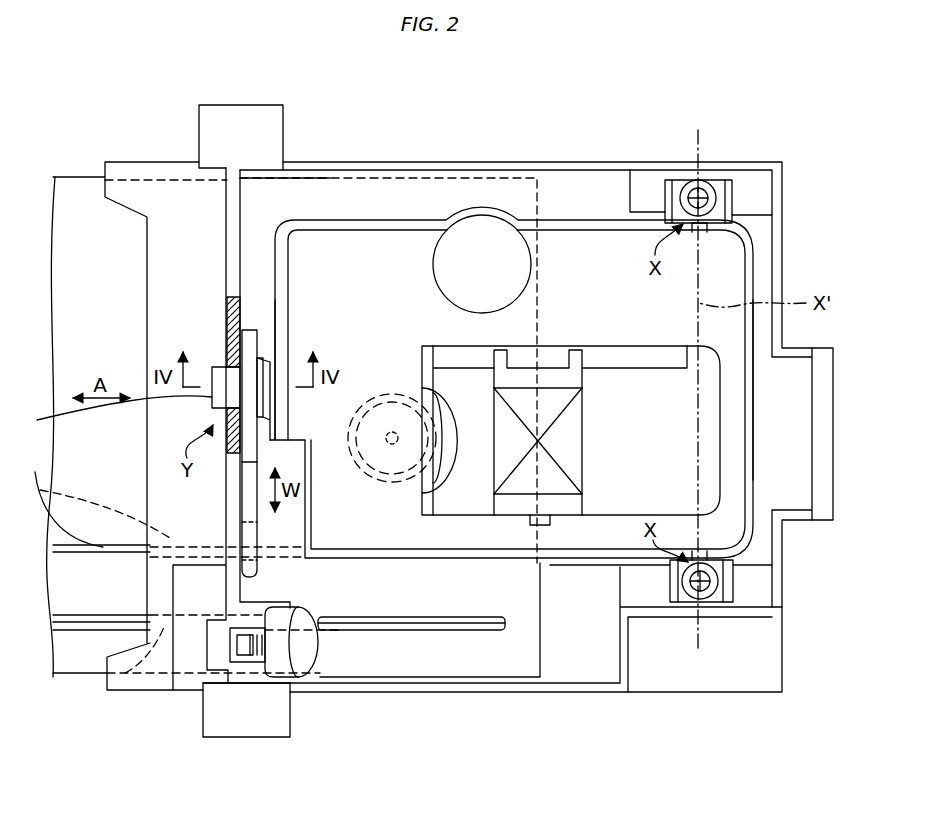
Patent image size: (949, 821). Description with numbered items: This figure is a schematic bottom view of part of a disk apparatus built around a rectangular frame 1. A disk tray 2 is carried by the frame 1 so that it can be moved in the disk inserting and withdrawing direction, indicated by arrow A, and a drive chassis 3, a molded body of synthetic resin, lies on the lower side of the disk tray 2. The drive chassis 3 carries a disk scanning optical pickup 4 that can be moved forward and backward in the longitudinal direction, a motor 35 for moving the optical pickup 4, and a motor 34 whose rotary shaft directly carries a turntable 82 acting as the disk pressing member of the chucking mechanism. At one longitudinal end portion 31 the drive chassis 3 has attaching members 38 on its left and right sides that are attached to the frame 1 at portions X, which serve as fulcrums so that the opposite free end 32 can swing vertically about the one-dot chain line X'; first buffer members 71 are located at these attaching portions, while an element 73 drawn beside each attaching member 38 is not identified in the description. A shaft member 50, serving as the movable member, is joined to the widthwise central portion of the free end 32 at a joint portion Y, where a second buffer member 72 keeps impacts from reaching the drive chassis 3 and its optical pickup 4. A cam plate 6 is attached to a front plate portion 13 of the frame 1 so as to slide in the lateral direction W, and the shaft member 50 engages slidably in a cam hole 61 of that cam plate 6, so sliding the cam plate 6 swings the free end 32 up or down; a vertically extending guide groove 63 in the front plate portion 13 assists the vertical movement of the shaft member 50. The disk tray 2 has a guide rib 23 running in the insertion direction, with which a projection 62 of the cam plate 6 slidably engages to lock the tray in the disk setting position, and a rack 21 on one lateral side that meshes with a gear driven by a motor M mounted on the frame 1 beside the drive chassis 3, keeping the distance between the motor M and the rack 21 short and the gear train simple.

The frame 1 is at (572, 160).
The disk tray 2 is at (137, 181).
The drive chassis 3 is at (384, 220).
The optical pickup 4 is at (560, 490).
The cam plate 6 is at (250, 330).
The front plate portion 13 is at (226, 302).
The rack 21 is at (102, 682).
The guide rib 23 is at (56, 497).
The longitudinal end portion 31 is at (752, 262).
The free end 32 is at (276, 250).
The motor 34 is at (378, 495).
The motor 35 is at (432, 265).
The attaching members 38 is at (712, 182).
The shaft member 50 is at (222, 367).
The cam hole 61 is at (268, 356).
The projection 62 is at (250, 660).
The guide groove 63 is at (110, 414).
The first buffer members 71 is at (685, 182).
The second buffer member 72 is at (264, 398).
The screw head 73 is at (716, 200).
The turntable 82 is at (427, 495).
The motor M is at (310, 663).